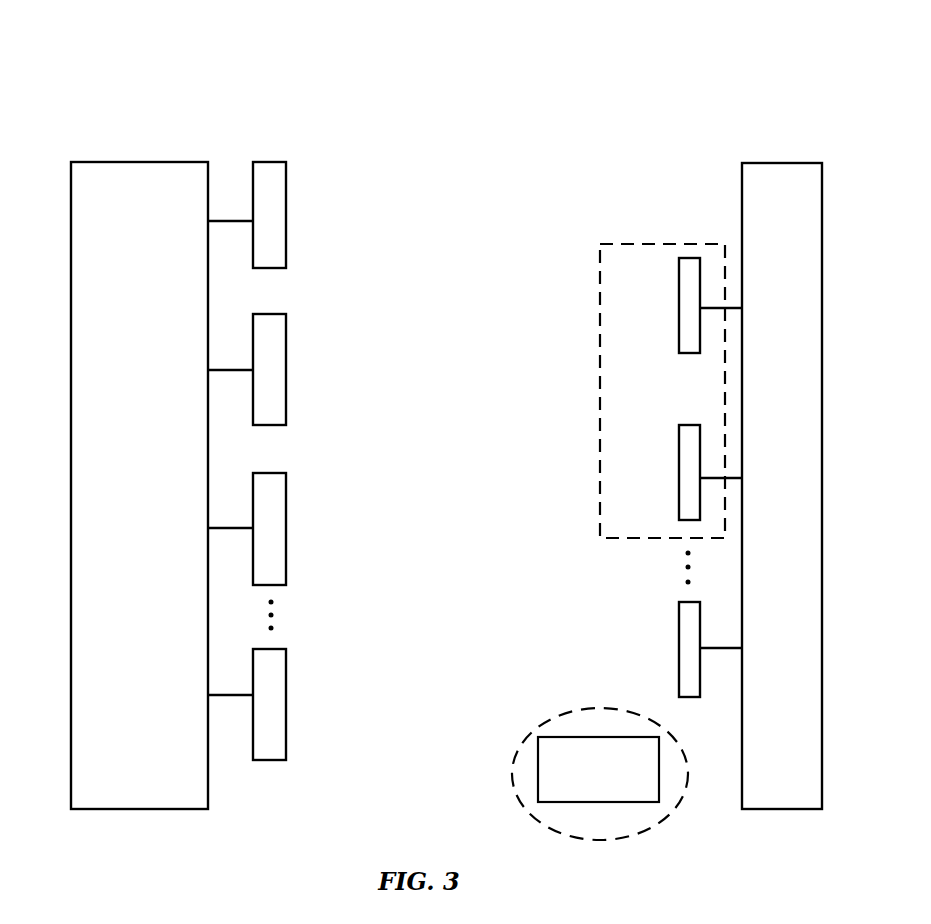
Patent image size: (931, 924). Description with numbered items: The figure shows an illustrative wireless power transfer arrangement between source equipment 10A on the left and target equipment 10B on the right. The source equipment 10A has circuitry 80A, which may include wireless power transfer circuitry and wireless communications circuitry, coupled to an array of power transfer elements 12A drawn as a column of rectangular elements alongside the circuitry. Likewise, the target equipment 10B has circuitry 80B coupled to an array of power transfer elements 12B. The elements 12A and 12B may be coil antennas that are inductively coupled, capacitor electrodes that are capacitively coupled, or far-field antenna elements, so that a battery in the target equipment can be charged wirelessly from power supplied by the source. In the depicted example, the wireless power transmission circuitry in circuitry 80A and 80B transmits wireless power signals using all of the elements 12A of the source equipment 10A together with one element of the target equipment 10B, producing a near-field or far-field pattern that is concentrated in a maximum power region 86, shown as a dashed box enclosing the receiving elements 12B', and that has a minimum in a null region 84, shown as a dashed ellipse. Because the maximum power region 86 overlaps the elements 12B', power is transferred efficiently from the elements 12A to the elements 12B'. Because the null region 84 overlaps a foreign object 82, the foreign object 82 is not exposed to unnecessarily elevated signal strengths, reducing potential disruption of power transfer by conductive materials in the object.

The source equipment 10A is at (55, 88).
The target equipment 10B is at (604, 85).
The circuitry 80A is at (165, 162).
The circuitry 80B is at (742, 175).
The power transfer elements 12A is at (338, 813).
The power transfer elements 12B is at (637, 443).
The maximum power region 86 is at (640, 244).
The wireless power transfer elements 12B' is at (653, 391).
The foreign object 82 is at (548, 737).
The null region 84 is at (512, 767).